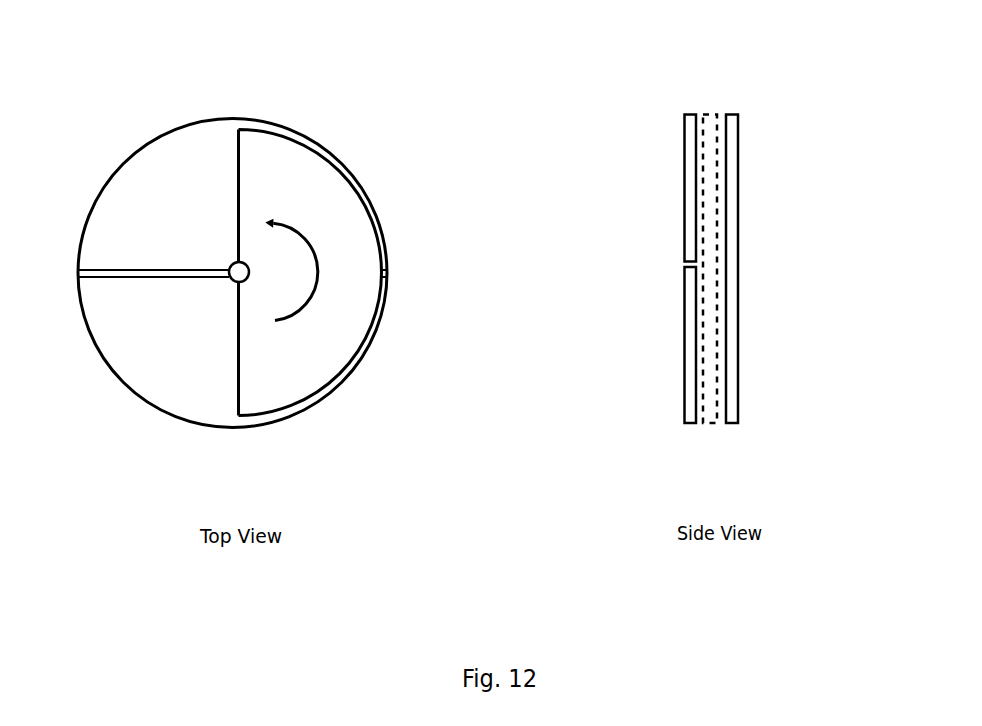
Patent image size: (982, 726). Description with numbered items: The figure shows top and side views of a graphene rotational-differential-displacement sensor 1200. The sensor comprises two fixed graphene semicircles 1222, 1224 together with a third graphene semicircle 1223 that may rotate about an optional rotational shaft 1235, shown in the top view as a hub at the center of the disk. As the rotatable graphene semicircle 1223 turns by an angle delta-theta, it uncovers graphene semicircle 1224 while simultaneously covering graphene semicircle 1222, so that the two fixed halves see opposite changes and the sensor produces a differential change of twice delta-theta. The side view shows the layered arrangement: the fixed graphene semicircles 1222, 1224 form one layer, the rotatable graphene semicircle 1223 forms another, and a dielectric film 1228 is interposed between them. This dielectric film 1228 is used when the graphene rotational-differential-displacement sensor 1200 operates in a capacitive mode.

The graphene rotational-differential-displacement sensor 1200 is at (147, 52).
The graphene semicircle 1222 is at (683, 188).
The graphene semicircle 1223 is at (317, 370).
The graphene semicircle 1224 is at (683, 347).
The dielectric film 1228 is at (710, 113).
The rotational shaft 1235 is at (233, 285).